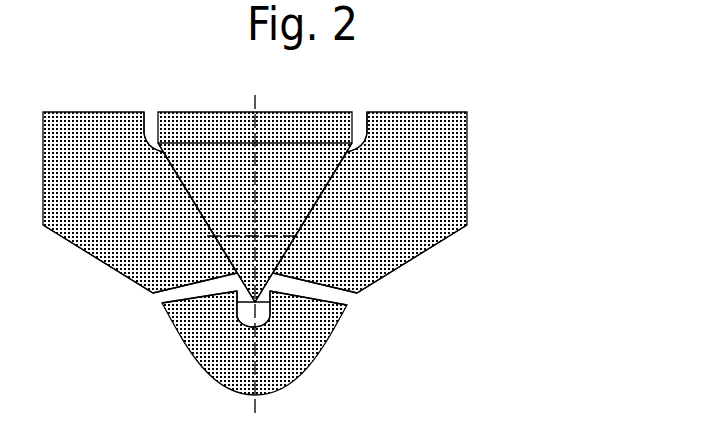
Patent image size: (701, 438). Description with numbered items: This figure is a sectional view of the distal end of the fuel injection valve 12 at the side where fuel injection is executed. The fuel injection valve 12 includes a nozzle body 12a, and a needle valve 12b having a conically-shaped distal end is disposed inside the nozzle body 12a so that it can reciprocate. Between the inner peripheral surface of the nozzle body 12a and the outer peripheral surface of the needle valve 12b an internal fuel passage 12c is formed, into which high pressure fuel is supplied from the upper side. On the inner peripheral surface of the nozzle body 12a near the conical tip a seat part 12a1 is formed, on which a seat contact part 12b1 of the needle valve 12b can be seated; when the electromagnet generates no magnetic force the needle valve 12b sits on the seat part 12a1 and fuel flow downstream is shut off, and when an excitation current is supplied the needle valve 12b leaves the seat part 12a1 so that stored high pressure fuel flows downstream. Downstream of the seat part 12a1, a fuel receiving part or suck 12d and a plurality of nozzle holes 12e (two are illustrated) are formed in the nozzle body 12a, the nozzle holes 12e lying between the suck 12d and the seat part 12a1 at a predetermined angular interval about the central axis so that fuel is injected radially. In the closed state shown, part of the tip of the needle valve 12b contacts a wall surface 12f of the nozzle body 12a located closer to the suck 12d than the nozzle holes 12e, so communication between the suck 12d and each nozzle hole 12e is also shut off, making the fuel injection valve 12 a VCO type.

The fuel injection valve 12 is at (313, 243).
The nozzle body 12a is at (288, 177).
The seat part 12a1 is at (380, 270).
The needle valve 12b is at (258, 238).
The seat contact part 12b1 is at (312, 180).
The internal fuel passage 12c is at (358, 117).
The fuel receiving part (suck) 12d is at (270, 318).
The nozzle holes 12e is at (163, 298).
The wall surface 12f is at (295, 359).